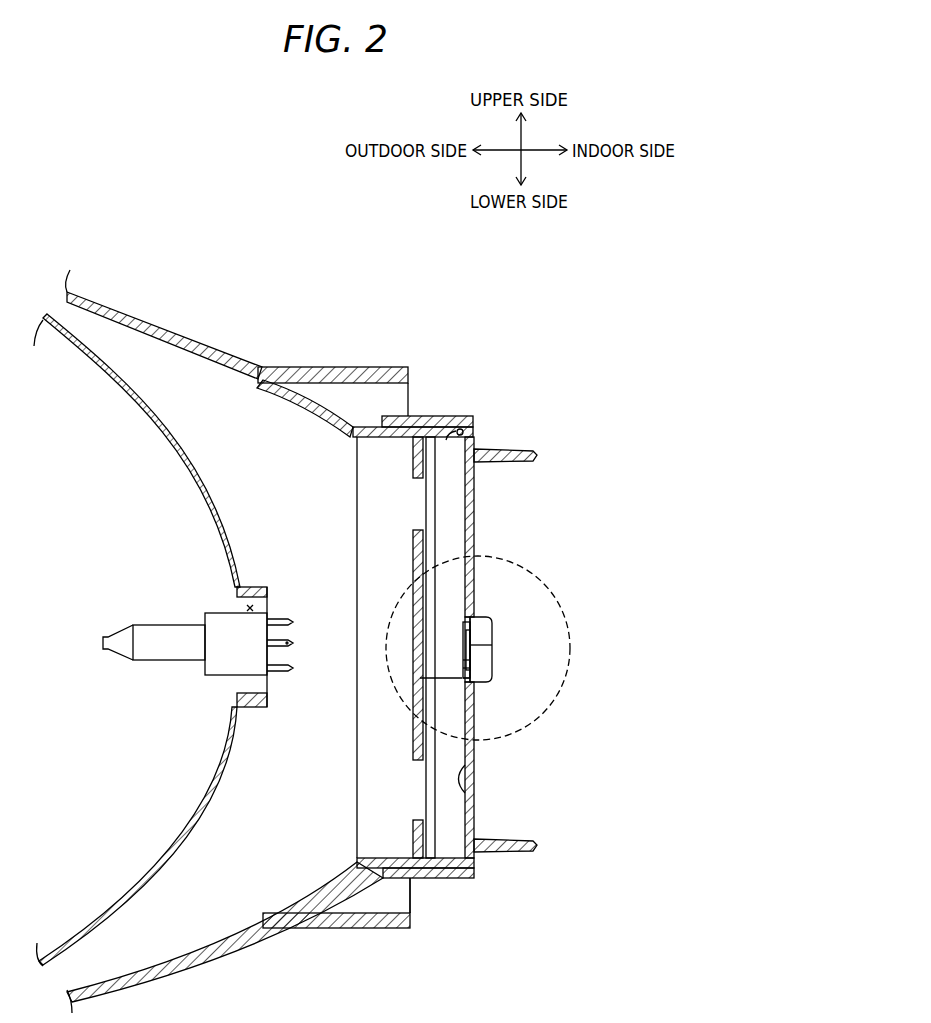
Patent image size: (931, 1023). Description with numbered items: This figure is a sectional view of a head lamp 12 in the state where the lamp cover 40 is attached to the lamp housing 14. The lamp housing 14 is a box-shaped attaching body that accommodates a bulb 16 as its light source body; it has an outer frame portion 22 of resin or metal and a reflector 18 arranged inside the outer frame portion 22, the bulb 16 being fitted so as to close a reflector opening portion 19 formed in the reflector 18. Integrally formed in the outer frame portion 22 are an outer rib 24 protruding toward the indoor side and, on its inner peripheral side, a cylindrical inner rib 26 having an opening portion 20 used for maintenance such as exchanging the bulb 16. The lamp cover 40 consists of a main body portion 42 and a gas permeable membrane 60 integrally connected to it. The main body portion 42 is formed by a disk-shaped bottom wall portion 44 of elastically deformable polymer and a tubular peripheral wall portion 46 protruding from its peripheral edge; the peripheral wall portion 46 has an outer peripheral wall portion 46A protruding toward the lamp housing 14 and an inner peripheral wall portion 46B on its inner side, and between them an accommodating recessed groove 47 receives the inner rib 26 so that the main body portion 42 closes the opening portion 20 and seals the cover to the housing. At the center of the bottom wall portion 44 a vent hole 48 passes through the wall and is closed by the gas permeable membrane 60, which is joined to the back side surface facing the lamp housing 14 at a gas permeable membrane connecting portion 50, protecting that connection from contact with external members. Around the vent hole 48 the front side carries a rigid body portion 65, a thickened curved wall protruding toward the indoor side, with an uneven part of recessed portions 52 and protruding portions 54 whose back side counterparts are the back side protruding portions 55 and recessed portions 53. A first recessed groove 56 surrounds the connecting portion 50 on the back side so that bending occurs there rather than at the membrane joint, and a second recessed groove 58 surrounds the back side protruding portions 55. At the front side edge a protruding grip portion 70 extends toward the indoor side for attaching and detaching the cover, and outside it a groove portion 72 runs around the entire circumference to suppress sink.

The head lamp 12 is at (403, 589).
The lamp housing 14 is at (222, 615).
The bulb 16 is at (148, 656).
The reflector 18 is at (82, 350).
The reflector opening portion 19 is at (246, 607).
The opening portion 20 is at (412, 511).
The outer frame portion 22 is at (112, 302).
The outer rib 24 is at (326, 367).
The inner rib 26 is at (423, 416).
The lamp cover 40 is at (403, 620).
The main body portion 42 is at (387, 620).
The bottom wall portion 44 is at (480, 516).
The peripheral wall portion 46 is at (509, 597).
The outer peripheral wall portion 46A is at (444, 420).
The inner peripheral wall portion 46B is at (472, 432).
The accommodating recessed groove 47 is at (463, 428).
The vent hole 48 is at (472, 668).
The gas permeable membrane connecting portion 50 is at (473, 686).
The recessed portions 52 is at (471, 692).
The back side recessed portions 53 is at (550, 749).
The protruding portions 54 is at (471, 714).
The back side protruding portions 55 is at (546, 727).
The first recessed groove 56 is at (420, 678).
The second recessed groove 58 is at (469, 800).
The gas permeable membrane 60 is at (472, 646).
The rigid body portion 65 is at (494, 630).
The protruding portion (grip portion) 70 is at (540, 454).
The groove portion 72 is at (481, 862).